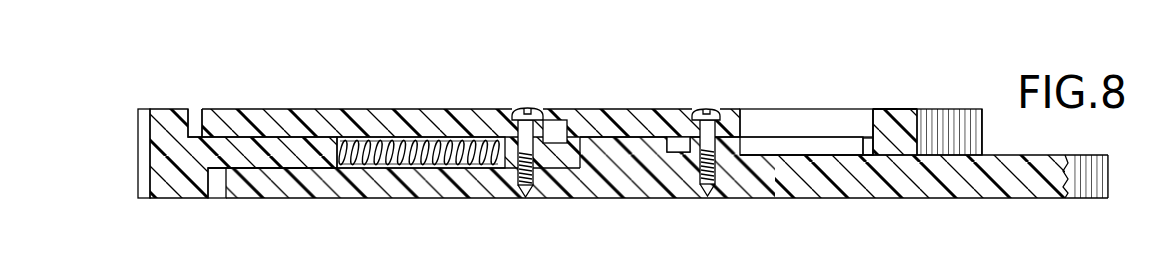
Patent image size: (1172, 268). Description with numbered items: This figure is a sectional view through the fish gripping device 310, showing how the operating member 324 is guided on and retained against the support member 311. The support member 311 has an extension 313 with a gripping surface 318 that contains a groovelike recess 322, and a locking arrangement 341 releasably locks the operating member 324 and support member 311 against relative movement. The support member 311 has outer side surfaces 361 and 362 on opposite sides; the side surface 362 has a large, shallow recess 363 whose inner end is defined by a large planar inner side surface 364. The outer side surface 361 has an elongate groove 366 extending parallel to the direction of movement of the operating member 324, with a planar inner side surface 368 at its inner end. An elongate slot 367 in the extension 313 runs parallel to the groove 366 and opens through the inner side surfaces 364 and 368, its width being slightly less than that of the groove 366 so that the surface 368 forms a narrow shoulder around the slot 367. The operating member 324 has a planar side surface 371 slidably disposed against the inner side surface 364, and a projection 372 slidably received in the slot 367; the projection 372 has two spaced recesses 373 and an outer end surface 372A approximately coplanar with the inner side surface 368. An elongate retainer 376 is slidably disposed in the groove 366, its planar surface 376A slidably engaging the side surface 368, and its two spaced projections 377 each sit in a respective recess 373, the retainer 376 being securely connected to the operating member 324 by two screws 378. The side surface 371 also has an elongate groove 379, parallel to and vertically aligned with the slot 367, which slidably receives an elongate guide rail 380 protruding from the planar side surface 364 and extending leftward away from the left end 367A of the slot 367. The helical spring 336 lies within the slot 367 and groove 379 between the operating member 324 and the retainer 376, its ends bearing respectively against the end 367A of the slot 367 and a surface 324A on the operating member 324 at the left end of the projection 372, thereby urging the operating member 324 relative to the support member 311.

The fish gripping device 310 is at (916, 92).
The support member 311 is at (898, 118).
The extension 313 is at (882, 118).
The gripping surface 318 is at (947, 110).
The groovelike recess 322 is at (970, 133).
The operating member 324 is at (627, 187).
The surface 324A is at (497, 168).
The helical spring 336 is at (445, 130).
The locking arrangement 341 is at (174, 104).
The outer side surface 361 is at (160, 108).
The outer side surface 362 is at (163, 198).
The recess 363 is at (215, 183).
The inner side surface 364 is at (890, 158).
The groove 366 is at (873, 110).
The slot 367 is at (863, 155).
The end of slot 367A is at (355, 145).
The inner side surface 368 is at (863, 138).
The side surface 371 is at (800, 155).
The projection 372 is at (745, 140).
The outer end surface 372A is at (655, 180).
The recesses 373 is at (548, 145).
The retainer 376 is at (488, 118).
The planar surface 376A is at (617, 130).
The projections 377 is at (548, 128).
The screws 378 is at (693, 118).
The groove 379 is at (434, 165).
The guide rail 380 is at (282, 158).